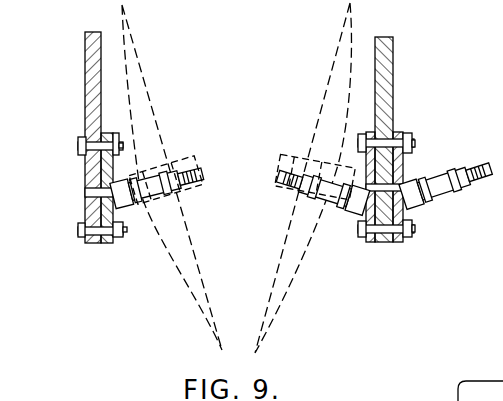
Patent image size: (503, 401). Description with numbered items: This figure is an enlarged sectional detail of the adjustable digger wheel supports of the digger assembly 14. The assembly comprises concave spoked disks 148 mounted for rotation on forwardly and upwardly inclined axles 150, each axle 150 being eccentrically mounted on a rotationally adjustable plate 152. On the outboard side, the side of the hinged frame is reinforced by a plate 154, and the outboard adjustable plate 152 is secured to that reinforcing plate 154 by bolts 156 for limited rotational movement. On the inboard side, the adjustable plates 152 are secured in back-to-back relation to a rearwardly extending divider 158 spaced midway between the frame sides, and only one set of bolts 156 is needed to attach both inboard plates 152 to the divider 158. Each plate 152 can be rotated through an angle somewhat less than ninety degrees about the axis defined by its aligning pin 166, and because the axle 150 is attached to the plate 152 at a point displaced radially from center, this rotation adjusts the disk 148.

The digger assembly 14 is at (330, 38).
The concave spoked disk 148 is at (146, 105).
The axle 150 is at (152, 185).
The adjustable plate 152 is at (110, 244).
The reinforcing plate 154 is at (86, 100).
The bolt 156 is at (80, 148).
The divider 158 is at (388, 92).
The aligning pin 166 is at (84, 196).